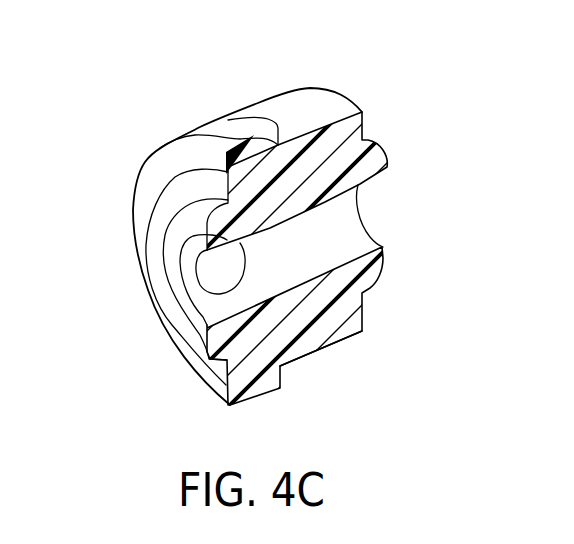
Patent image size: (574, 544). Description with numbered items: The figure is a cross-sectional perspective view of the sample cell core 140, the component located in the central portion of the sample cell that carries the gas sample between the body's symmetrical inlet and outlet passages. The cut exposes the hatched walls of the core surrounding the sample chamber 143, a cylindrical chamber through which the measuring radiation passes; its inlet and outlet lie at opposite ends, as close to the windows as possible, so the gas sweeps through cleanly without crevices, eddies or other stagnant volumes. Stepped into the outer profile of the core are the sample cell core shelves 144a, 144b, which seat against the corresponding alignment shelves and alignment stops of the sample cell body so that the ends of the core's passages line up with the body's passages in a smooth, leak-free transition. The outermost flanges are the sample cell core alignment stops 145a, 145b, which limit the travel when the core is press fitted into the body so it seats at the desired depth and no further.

The sample cell core 140 is at (133, 242).
The sample chamber 143 is at (335, 235).
The sample cell core shelf 144a is at (320, 100).
The sample cell core shelf 144b is at (337, 345).
The sample cell core alignment stop 145a is at (264, 114).
The sample cell core alignment stop 145b is at (287, 378).